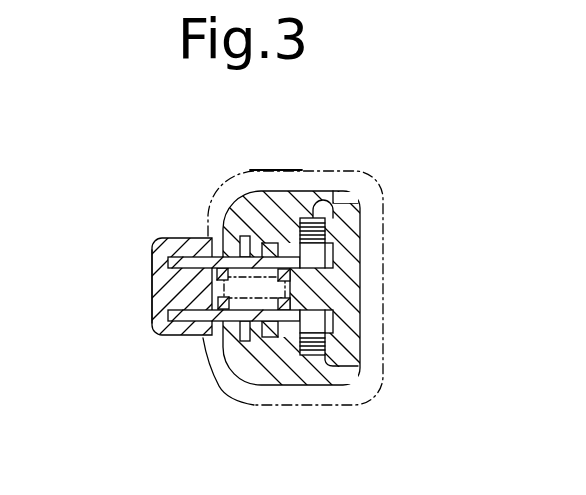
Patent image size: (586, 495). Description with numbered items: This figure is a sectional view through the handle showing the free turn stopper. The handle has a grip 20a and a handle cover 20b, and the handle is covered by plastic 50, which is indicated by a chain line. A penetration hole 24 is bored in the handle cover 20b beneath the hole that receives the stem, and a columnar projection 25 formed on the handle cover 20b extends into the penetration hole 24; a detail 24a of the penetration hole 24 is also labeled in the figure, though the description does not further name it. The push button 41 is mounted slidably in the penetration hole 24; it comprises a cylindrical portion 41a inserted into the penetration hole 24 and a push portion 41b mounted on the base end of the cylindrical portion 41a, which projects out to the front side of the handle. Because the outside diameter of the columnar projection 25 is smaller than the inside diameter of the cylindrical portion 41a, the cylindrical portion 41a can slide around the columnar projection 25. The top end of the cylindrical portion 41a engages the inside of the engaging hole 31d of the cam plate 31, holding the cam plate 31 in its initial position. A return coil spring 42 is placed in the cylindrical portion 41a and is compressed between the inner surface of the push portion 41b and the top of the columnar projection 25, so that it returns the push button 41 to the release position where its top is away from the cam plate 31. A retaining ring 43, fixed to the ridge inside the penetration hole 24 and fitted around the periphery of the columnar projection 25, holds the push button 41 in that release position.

The grip 20a is at (292, 171).
The handle cover 20b is at (362, 235).
The penetration hole 24 is at (218, 337).
The bushing flange 24a is at (238, 334).
The columnar projection 25 is at (306, 273).
The cam plate 31 is at (362, 192).
The engaging hole 31d is at (322, 327).
The push button 41 is at (160, 242).
The cylindrical portion 41a is at (221, 257).
The push portion 41b is at (152, 282).
The return coil spring 42 is at (172, 333).
The retaining ring 43 is at (268, 241).
The plastic 50 is at (380, 384).